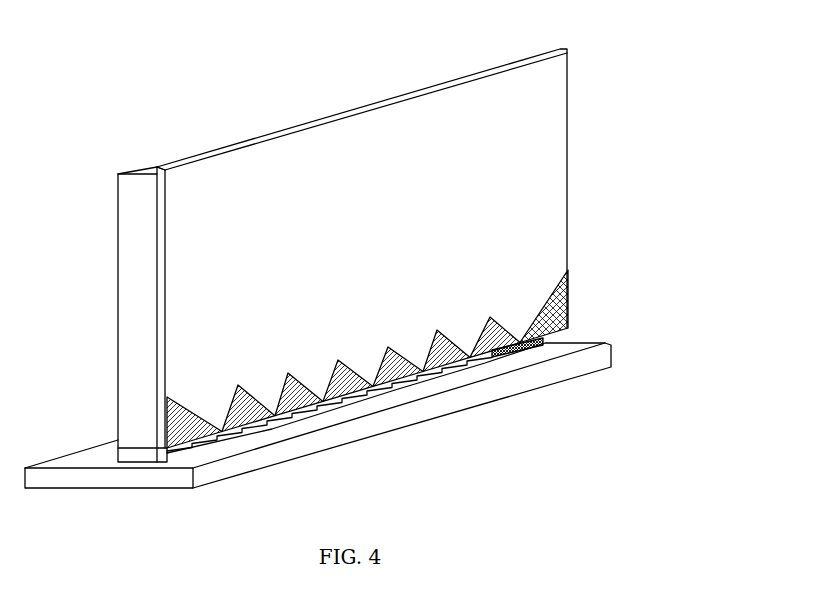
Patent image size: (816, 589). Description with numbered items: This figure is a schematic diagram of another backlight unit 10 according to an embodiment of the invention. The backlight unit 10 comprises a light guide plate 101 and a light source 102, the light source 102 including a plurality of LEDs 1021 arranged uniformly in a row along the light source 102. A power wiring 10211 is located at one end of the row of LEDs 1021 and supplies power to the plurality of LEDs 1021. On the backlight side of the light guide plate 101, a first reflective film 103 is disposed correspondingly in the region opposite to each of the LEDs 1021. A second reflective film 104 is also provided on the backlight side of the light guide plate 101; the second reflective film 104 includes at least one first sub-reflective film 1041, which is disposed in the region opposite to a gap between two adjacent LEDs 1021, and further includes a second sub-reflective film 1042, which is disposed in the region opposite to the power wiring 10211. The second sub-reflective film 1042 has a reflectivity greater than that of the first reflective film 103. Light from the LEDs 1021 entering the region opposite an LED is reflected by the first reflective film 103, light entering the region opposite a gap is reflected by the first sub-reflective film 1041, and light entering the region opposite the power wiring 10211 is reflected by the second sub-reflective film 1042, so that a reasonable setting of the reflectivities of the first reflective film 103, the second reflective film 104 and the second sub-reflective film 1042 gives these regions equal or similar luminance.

The backlight unit 10 is at (427, 78).
The light guide plate 101 is at (132, 350).
The light source 102 is at (113, 489).
The first reflective film 103 is at (552, 207).
The second reflective film 104 is at (532, 312).
The first sub-reflective film 1041 is at (167, 422).
The second sub-reflective film 1042 is at (570, 286).
The LEDs 1021 is at (167, 449).
The power wiring 10211 is at (545, 341).